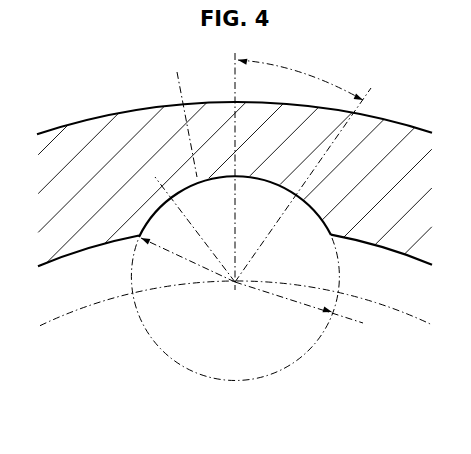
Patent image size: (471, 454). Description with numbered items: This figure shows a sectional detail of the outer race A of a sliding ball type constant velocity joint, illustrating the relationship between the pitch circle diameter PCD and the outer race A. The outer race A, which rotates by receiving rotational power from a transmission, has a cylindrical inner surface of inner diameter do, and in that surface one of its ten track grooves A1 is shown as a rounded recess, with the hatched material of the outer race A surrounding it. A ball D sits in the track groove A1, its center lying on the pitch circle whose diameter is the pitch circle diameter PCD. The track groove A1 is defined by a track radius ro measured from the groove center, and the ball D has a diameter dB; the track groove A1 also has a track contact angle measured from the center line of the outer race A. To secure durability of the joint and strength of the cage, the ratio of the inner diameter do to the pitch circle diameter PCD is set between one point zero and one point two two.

The outer race A is at (118, 130).
The track groove A1 is at (180, 115).
The track radius ro is at (333, 248).
The pin diameter dB is at (299, 302).
The inner diameter do is at (80, 257).
The pitch circle diameter PCD is at (167, 292).
The ball D is at (288, 367).